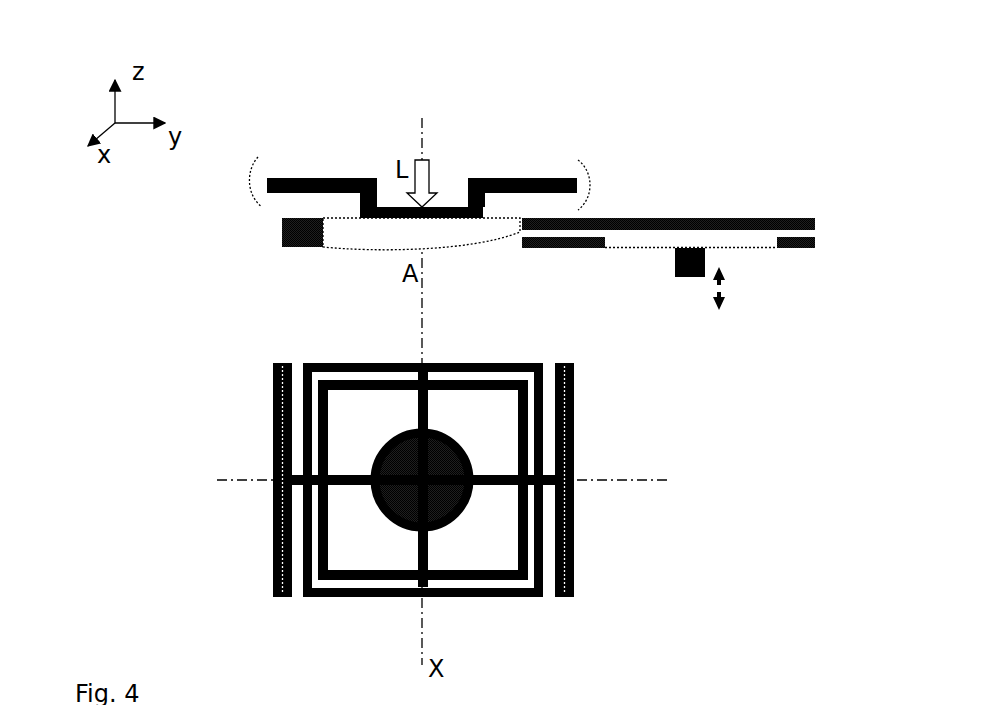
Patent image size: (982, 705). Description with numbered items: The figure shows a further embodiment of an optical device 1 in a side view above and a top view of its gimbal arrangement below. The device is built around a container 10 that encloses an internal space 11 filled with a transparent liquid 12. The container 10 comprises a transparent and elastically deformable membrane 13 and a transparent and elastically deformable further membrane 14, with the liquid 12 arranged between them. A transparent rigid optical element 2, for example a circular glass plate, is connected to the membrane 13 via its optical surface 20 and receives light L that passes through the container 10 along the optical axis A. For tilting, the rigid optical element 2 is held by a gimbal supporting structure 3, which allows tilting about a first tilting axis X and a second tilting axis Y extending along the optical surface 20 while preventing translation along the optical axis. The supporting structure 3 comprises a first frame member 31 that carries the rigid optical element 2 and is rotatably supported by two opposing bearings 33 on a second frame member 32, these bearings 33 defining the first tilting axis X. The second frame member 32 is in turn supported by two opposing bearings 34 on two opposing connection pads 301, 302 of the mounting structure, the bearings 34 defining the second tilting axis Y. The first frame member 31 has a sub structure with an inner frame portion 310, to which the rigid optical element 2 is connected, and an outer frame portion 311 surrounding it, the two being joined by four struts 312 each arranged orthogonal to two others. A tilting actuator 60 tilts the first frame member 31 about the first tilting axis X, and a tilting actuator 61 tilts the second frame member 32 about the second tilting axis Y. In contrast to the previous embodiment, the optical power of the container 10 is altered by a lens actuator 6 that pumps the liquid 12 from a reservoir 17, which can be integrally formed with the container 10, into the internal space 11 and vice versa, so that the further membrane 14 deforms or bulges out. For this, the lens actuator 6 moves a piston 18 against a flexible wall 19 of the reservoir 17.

The optical device 1 is at (298, 138).
The transparent rigid optical element 2 is at (457, 207).
The gimbal supporting structure 3 is at (538, 177).
The lens actuator 6 is at (722, 270).
The container 10 is at (282, 232).
The internal space 11 is at (388, 230).
The transparent liquid 12 is at (432, 238).
The membrane 13 is at (337, 218).
The further membrane 14 is at (487, 250).
The reservoir 17 is at (728, 237).
The piston 18 is at (675, 277).
The flexible wall 19 is at (632, 248).
The optical surface 20 is at (445, 207).
The first frame member 31 is at (377, 580).
The second frame member 32 is at (490, 597).
The bearings 33 is at (410, 372).
The bearings 34 is at (272, 515).
The tilting actuator 60 is at (588, 180).
The tilting actuator 61 is at (253, 167).
The connection pad 301 is at (273, 418).
The connection pad 302 is at (578, 417).
The inner frame portion 310 is at (392, 437).
The outer frame portion 311 is at (342, 580).
The struts 312 is at (352, 487).